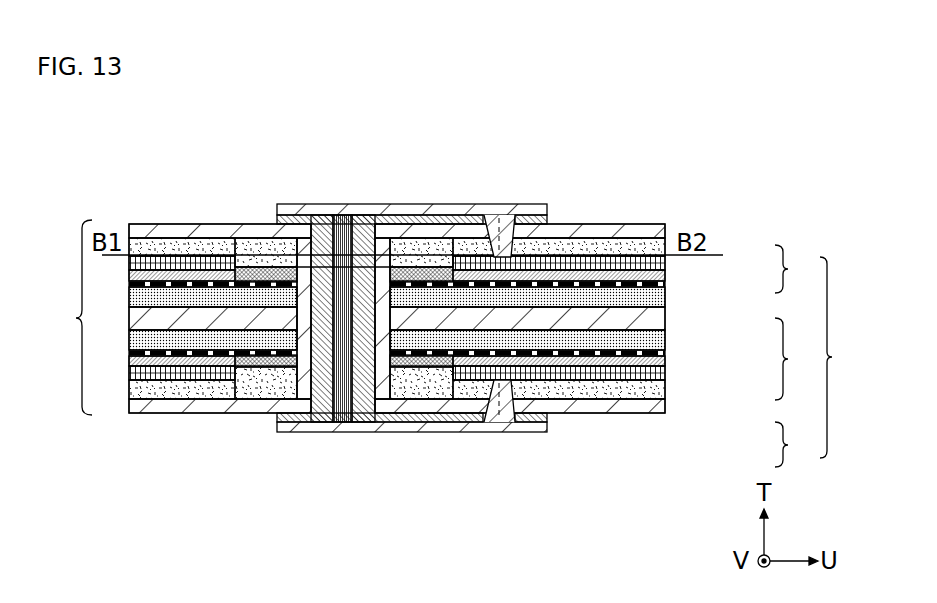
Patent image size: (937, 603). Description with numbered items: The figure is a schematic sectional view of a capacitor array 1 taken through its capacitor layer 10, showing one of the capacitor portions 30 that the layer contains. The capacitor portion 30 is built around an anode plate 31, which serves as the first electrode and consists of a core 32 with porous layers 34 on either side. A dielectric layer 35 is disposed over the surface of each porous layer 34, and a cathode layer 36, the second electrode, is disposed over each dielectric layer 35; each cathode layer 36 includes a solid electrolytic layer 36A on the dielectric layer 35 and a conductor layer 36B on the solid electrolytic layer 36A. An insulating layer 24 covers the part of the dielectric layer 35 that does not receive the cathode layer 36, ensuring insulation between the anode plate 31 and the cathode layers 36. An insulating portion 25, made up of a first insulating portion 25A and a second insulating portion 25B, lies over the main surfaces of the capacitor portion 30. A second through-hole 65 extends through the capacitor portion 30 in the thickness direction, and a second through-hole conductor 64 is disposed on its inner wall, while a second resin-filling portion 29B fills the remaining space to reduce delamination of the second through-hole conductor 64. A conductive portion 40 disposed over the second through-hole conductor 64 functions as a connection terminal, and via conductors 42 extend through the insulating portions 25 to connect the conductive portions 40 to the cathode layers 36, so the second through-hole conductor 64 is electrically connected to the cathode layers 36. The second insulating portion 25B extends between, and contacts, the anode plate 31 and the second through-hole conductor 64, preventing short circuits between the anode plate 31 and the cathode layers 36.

The capacitor array 1 is at (733, 177).
The capacitor layer 10 is at (179, 317).
The insulating layer 24 is at (262, 270).
The insulating portion 25 is at (690, 156).
The first insulating portion 25A is at (577, 248).
The second insulating portion 25B is at (647, 230).
The second resin-filling portion 29B is at (343, 232).
The capacitor portion 30 is at (840, 357).
The anode plate 31 is at (795, 359).
The core 32 is at (656, 319).
The porous layer 34 is at (656, 297).
The dielectric layer 35 is at (656, 284).
The cathode layer 36 is at (796, 356).
The solid electrolytic layer 36A is at (656, 278).
The conductor layer 36B is at (657, 263).
The conductive portion 40 is at (394, 210).
The via conductor 42 is at (498, 235).
The second through-hole conductor 64 is at (323, 236).
The second through-hole 65 is at (293, 268).